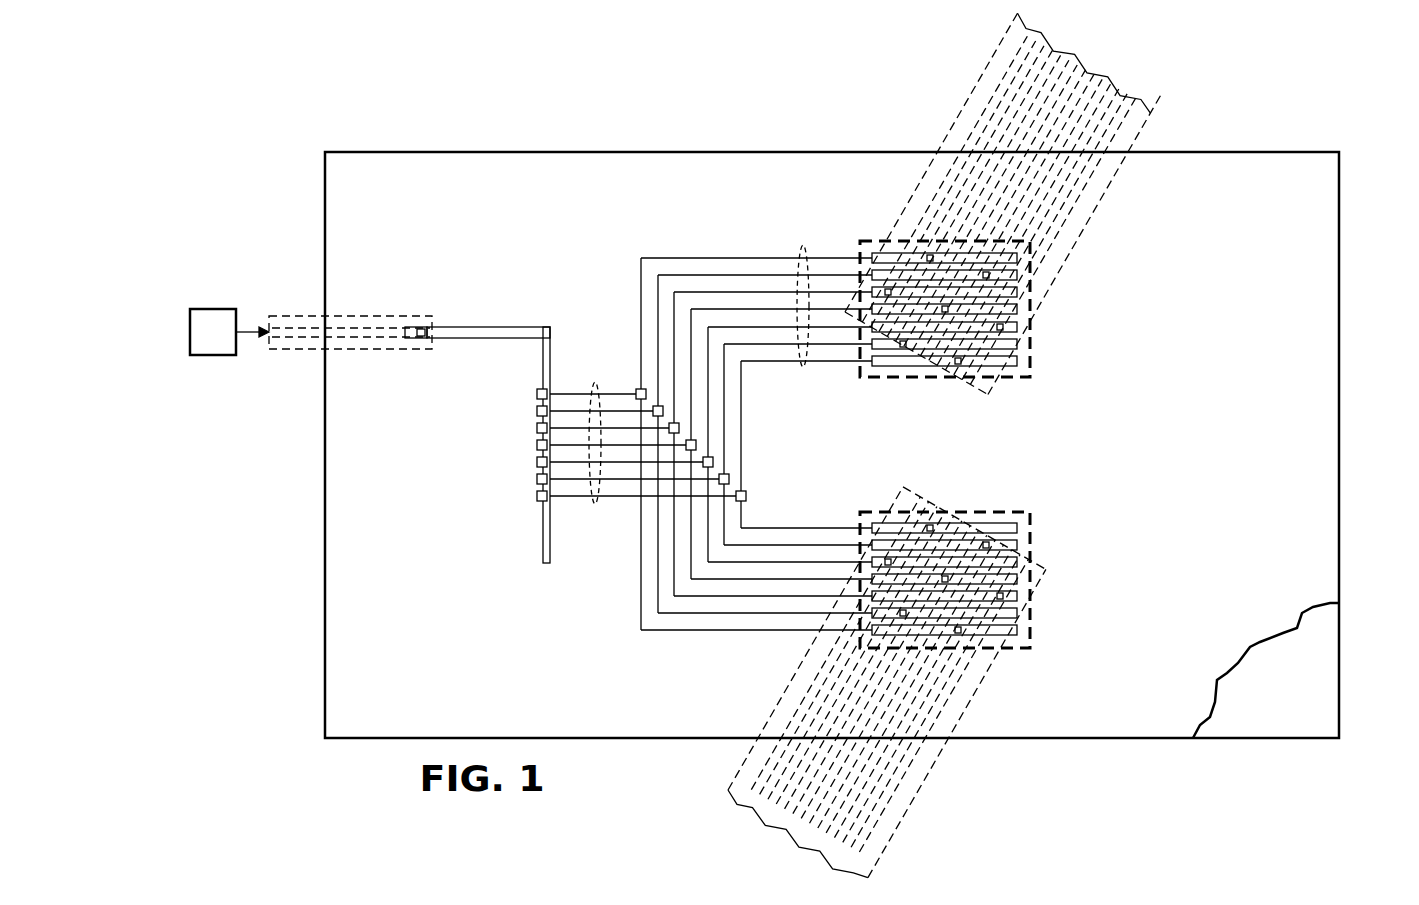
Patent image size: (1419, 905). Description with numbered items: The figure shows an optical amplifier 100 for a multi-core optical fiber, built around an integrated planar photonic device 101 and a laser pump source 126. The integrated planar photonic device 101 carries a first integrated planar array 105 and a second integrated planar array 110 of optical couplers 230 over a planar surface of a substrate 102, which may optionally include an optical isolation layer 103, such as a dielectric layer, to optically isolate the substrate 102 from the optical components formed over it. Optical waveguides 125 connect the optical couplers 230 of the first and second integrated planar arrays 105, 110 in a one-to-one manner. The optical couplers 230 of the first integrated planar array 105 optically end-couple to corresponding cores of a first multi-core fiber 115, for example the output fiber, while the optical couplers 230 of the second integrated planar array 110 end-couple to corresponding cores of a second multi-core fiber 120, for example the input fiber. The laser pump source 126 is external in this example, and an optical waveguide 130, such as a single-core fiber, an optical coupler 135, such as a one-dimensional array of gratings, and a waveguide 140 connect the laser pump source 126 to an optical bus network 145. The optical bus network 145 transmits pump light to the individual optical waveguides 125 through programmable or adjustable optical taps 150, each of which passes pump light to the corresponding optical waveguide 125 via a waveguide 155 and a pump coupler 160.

The optical amplifier 100 is at (640, 88).
The integrated planar photonic device 101 is at (434, 147).
The substrate 102 is at (1305, 701).
The optical isolation layer 103 is at (1223, 461).
The first integrated planar array 105 is at (886, 387).
The second integrated planar array 110 is at (1003, 503).
The first multi-core fiber 115 is at (965, 115).
The second multi-core fiber 120 is at (927, 775).
The optical waveguides 125 is at (803, 246).
The laser pump source 126 is at (213, 308).
The optical waveguide 130 is at (373, 350).
The optical coupler 135 is at (408, 327).
The waveguide 140 is at (495, 319).
The optical bus network 145 is at (543, 535).
The programmable optical taps 150 is at (538, 396).
The waveguide 155 is at (597, 505).
The pump coupler 160 is at (634, 389).
The optical couplers 230 is at (958, 368).